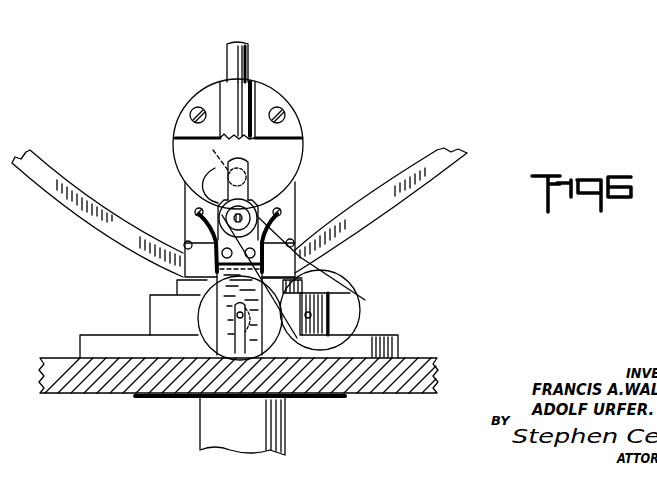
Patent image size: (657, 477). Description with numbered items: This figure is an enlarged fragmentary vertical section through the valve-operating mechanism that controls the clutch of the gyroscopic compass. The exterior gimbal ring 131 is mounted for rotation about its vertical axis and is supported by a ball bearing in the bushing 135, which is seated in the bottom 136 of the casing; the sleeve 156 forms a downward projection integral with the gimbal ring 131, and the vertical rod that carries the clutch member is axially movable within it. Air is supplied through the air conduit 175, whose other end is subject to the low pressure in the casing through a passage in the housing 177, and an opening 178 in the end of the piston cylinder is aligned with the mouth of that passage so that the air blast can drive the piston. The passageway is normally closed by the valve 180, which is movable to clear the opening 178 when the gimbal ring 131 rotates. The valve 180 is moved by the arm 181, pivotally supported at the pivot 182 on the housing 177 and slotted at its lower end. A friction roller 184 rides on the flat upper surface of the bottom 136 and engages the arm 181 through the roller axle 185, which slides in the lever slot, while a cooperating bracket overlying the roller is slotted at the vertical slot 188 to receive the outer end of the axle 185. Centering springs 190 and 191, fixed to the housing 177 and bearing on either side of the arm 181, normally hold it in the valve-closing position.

The air conduit 175 is at (246, 68).
The housing 177 is at (246, 101).
The opening 178 is at (209, 174).
The valve 180 is at (250, 166).
The pivot 182 is at (250, 192).
The centering spring 190 is at (200, 224).
The centering spring 191 is at (280, 226).
The exterior gimbal ring 131 is at (110, 245).
The arm 181 is at (185, 280).
The friction roller 184 is at (198, 316).
The vertical slot 188 is at (237, 345).
The roller axle 185 is at (306, 316).
The bushing 135 is at (332, 310).
The bottom of casing 136 is at (130, 384).
The sleeve 156 is at (200, 433).